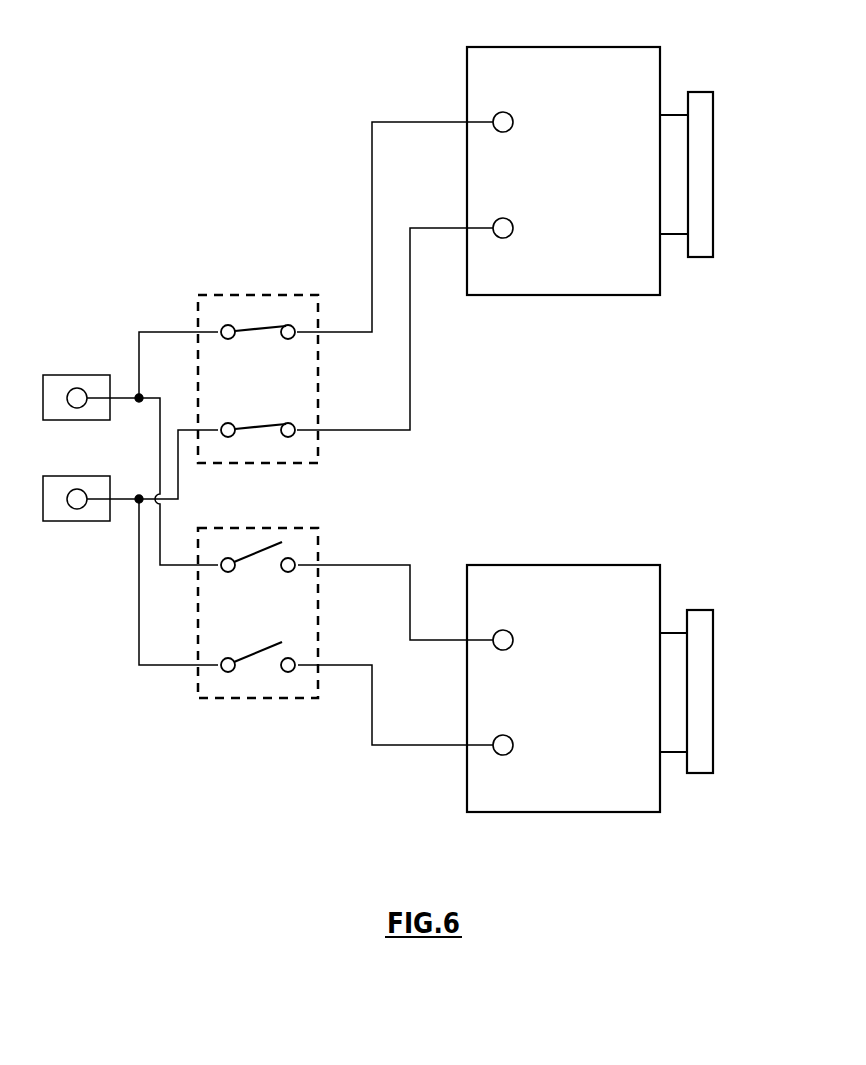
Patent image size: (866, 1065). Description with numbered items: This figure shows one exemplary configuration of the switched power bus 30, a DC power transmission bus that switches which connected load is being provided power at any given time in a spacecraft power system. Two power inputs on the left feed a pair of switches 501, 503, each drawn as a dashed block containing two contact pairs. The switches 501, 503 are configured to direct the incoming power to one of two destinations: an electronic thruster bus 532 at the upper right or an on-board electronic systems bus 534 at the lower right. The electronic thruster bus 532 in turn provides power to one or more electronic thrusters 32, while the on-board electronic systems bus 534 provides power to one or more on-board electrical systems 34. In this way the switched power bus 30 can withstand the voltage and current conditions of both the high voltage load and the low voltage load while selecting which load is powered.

The switched power bus 30 is at (182, 91).
The electronic thruster 32 is at (709, 156).
The on-board electrical system 34 is at (710, 672).
The switch 501 is at (260, 295).
The switch 503 is at (236, 698).
The electronic thruster bus 532 is at (591, 179).
The on-board electronic systems bus 534 is at (590, 696).